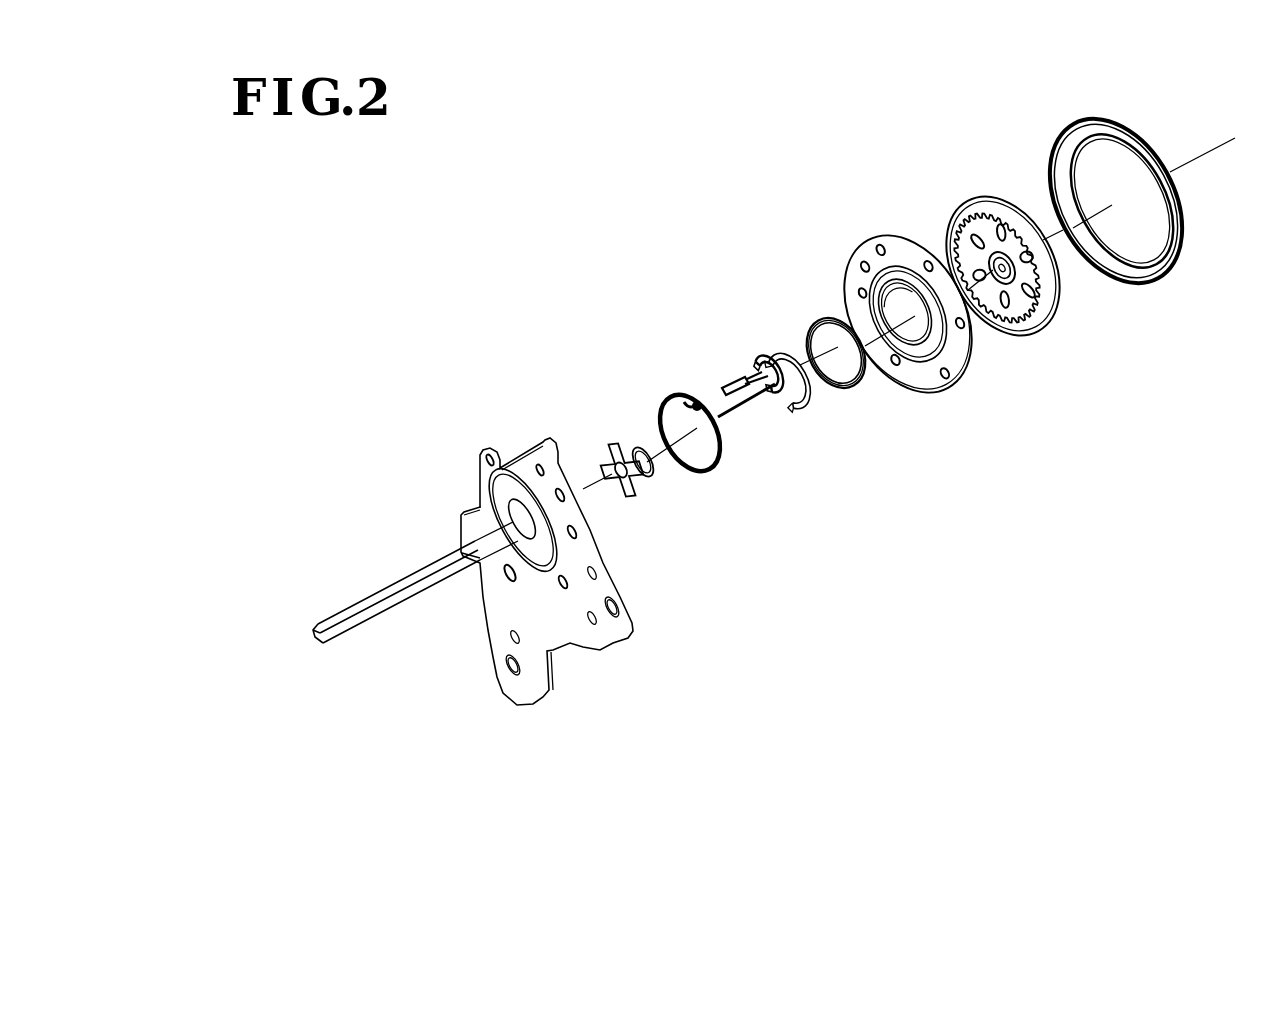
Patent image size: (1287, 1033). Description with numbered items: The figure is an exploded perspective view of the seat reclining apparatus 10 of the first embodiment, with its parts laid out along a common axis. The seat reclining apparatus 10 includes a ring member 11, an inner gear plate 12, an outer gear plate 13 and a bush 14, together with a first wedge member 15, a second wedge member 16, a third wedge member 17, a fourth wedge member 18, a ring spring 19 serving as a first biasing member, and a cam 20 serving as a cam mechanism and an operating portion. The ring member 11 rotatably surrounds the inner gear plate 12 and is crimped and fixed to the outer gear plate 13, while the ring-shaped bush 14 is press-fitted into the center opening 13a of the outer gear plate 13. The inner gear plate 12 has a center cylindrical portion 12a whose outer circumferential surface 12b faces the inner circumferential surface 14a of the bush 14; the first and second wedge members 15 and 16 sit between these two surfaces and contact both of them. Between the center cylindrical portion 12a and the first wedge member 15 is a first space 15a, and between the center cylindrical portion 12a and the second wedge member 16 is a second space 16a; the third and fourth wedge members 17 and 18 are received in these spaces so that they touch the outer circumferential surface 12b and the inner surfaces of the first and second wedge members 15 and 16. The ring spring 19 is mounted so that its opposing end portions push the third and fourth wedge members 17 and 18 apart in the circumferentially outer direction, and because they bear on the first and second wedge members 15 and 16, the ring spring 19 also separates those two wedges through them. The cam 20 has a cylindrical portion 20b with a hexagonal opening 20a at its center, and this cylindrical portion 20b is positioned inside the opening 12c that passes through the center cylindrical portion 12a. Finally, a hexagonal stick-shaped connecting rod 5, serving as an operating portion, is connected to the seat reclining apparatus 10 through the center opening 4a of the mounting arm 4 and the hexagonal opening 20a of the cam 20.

The mounting arm 4 is at (570, 643).
The center opening 4a is at (500, 463).
The connecting rod 5 is at (378, 585).
The seat reclining apparatus 10 is at (762, 190).
The ring member 11 is at (1143, 287).
The inner gear plate 12 is at (1057, 308).
The center cylindrical portion 12a is at (953, 213).
The outer circumferential surface 12b is at (980, 200).
The opening 12c is at (1030, 323).
The outer gear plate 13 is at (927, 395).
The center opening 13a is at (920, 330).
The bush 14 is at (822, 313).
The inner circumferential surface 14a is at (848, 388).
The first wedge member 15 is at (765, 362).
The first space 15a is at (770, 400).
The second wedge member 16 is at (802, 378).
The second space 16a is at (785, 377).
The third wedge member 17 is at (734, 382).
The fourth wedge member 18 is at (745, 385).
The ring spring 19 is at (693, 473).
The cam 20 is at (640, 500).
The hexagonal opening 20a is at (622, 450).
The cylindrical portion 20b is at (636, 452).